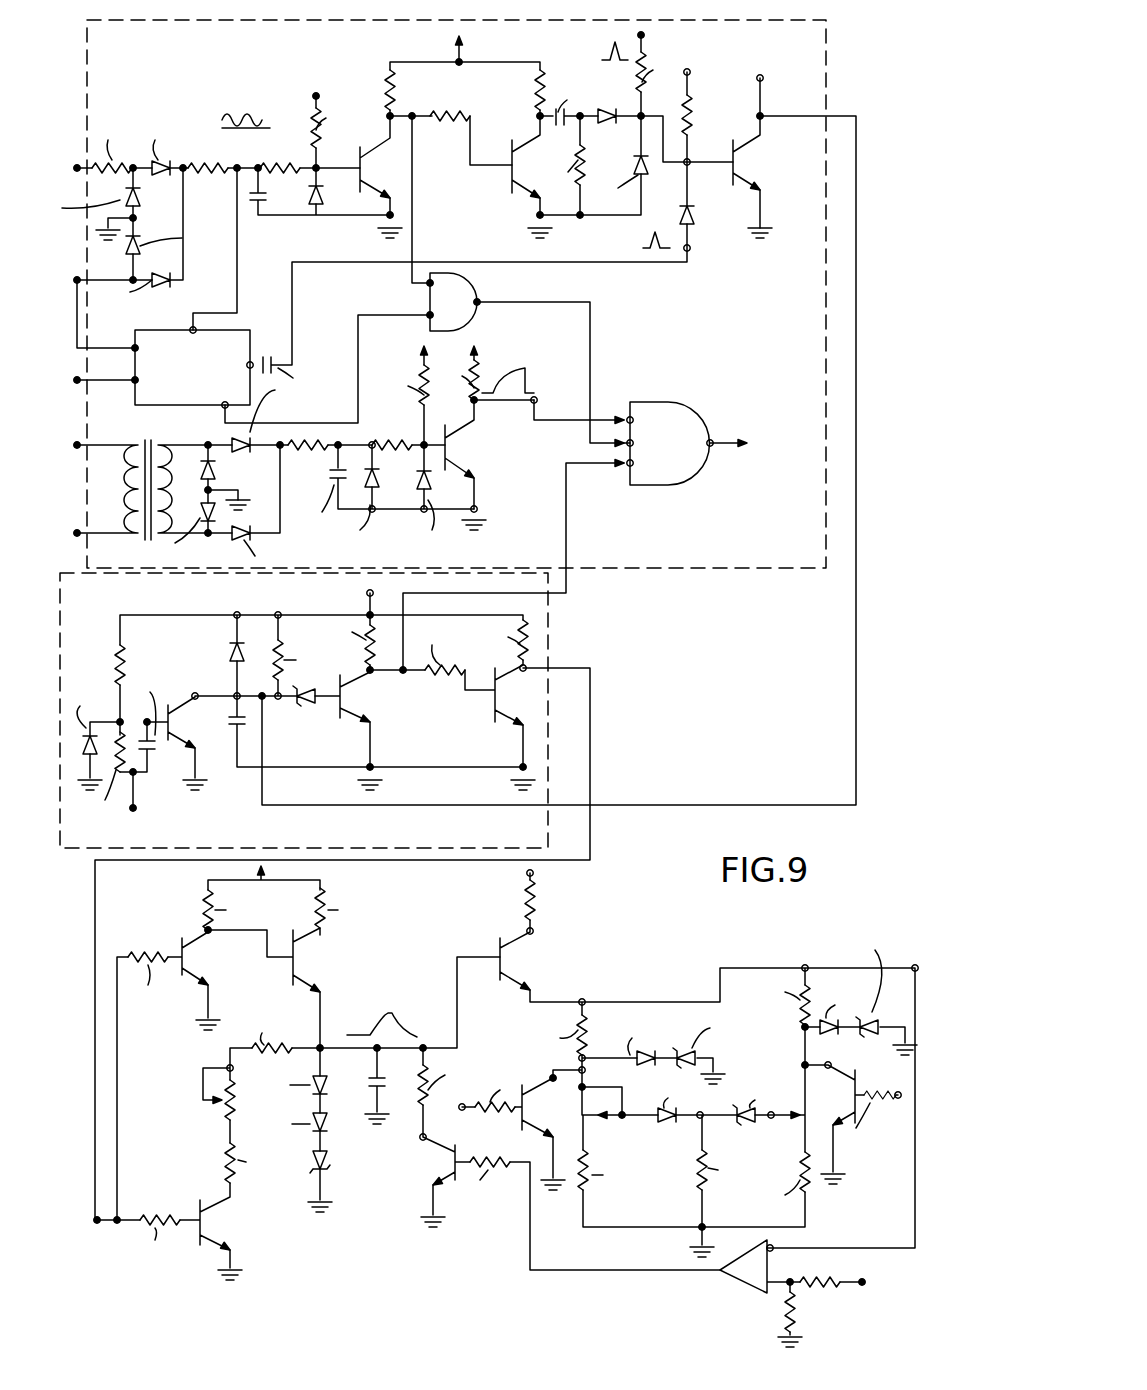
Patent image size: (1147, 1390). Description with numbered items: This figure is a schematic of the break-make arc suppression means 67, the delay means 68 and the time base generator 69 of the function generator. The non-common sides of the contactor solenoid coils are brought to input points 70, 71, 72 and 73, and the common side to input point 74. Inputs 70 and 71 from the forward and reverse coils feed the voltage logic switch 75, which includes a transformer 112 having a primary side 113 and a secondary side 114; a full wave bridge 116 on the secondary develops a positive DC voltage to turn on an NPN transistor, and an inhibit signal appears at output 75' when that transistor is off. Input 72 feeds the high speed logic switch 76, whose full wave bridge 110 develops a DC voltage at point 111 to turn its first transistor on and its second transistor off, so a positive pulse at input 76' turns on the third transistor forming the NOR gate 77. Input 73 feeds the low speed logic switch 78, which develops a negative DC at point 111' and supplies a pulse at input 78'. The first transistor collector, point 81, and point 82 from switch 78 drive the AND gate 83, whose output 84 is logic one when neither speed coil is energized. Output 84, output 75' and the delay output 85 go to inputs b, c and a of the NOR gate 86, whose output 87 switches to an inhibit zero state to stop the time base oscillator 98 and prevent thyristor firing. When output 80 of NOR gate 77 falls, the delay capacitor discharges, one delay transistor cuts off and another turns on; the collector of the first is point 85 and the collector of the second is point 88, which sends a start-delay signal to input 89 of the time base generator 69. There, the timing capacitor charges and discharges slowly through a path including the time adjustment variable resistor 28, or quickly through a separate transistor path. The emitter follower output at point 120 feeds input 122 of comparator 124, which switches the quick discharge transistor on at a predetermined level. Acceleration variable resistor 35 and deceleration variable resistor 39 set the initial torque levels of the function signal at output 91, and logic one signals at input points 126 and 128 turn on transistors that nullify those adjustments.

The break-make arc suppression means 67 is at (688, 353).
The delay means 68 is at (345, 839).
The time base generator 69 is at (445, 1291).
The input point 70 is at (52, 446).
The input point 71 is at (51, 534).
The input point 72 is at (54, 169).
The input point 73 is at (51, 381).
The input point 74 is at (53, 273).
The voltage logic switch 75 is at (428, 446).
The output 75' is at (553, 394).
The high speed logic switch 76 is at (224, 182).
The input 76' is at (564, 133).
The NOR gate 77 is at (785, 145).
The low speed logic switch 78 is at (253, 295).
The input 78' is at (687, 249).
The output 80 is at (276, 722).
The input 81 is at (414, 120).
The input 82 is at (430, 315).
The AND gate 83 is at (472, 318).
The output 84 is at (470, 292).
The output 85 is at (603, 463).
The NOR gate 86 is at (680, 473).
The output 87 is at (718, 450).
The output 88 is at (526, 666).
The input 89 is at (97, 1222).
The output 91 is at (705, 1114).
The time base oscillator 98 is at (782, 489).
The full wave bridge 110 is at (160, 210).
The point 111 is at (248, 153).
The point 111' is at (170, 345).
The transformer 112 is at (160, 440).
The primary side 113 is at (118, 496).
The secondary side 114 is at (176, 450).
The full wave bridge 116 is at (250, 484).
The point 120 is at (585, 1000).
The input 122 is at (780, 1245).
The comparator 124 is at (732, 1280).
The input point 126 is at (466, 1118).
The input point 128 is at (892, 1118).
The variable resistor 28 is at (197, 1107).
The acceleration variable resistor 35 is at (622, 1158).
The deceleration variable resistor 39 is at (734, 1158).